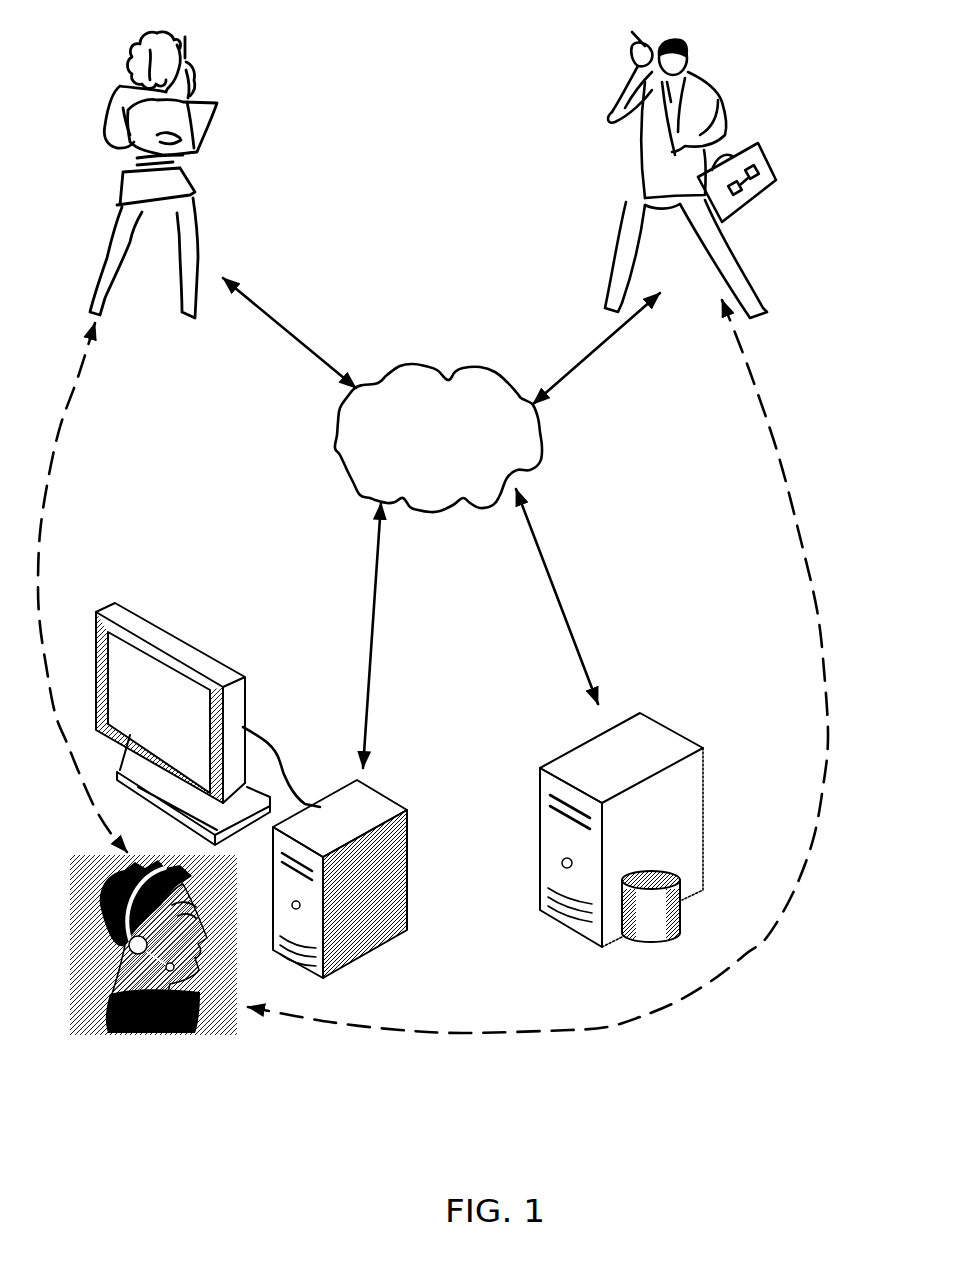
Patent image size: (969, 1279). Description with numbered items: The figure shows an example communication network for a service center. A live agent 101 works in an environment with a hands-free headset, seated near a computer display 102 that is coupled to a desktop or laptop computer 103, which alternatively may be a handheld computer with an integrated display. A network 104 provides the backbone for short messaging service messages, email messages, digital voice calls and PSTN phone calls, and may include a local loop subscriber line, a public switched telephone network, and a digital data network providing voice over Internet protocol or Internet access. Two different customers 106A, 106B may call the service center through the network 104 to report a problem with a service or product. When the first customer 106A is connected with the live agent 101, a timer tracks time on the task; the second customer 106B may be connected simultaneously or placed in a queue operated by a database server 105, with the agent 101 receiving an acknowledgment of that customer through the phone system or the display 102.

The live agent 101 is at (213, 1010).
The computer display 102 is at (177, 650).
The desktop or laptop computer 103 is at (358, 808).
The network 104 is at (438, 438).
The database server 105 is at (658, 770).
The customer 106A is at (215, 118).
The customer 106B is at (733, 133).